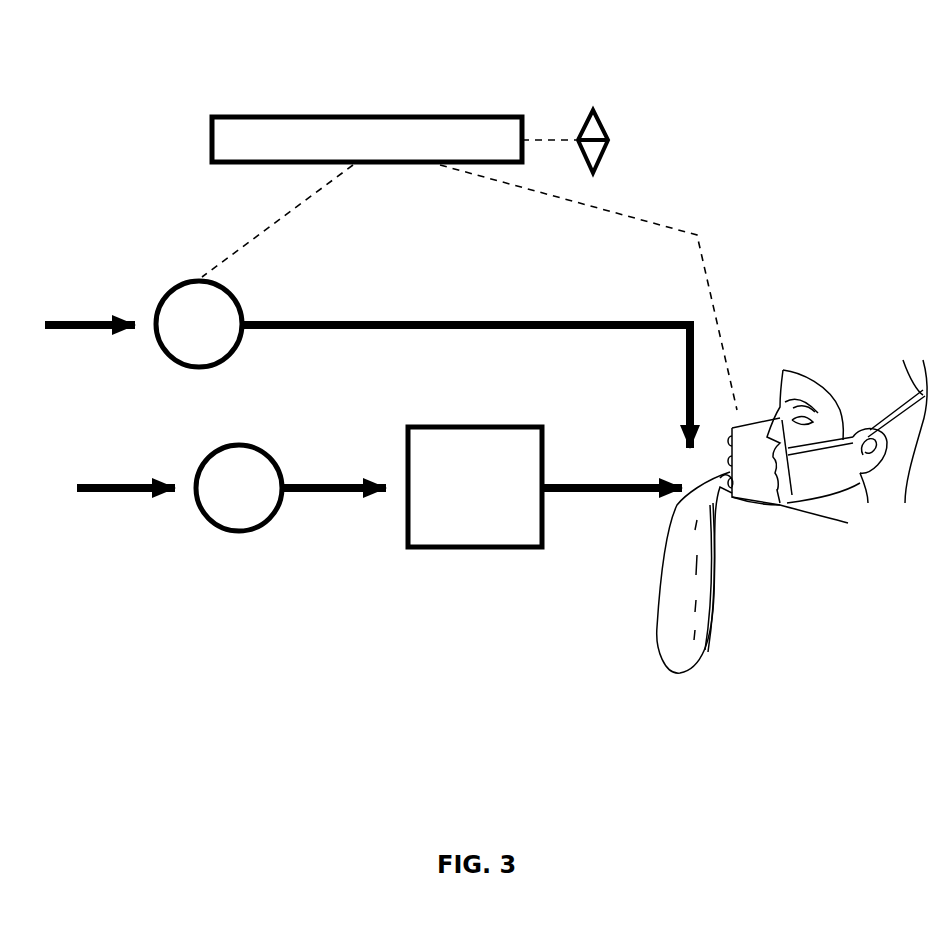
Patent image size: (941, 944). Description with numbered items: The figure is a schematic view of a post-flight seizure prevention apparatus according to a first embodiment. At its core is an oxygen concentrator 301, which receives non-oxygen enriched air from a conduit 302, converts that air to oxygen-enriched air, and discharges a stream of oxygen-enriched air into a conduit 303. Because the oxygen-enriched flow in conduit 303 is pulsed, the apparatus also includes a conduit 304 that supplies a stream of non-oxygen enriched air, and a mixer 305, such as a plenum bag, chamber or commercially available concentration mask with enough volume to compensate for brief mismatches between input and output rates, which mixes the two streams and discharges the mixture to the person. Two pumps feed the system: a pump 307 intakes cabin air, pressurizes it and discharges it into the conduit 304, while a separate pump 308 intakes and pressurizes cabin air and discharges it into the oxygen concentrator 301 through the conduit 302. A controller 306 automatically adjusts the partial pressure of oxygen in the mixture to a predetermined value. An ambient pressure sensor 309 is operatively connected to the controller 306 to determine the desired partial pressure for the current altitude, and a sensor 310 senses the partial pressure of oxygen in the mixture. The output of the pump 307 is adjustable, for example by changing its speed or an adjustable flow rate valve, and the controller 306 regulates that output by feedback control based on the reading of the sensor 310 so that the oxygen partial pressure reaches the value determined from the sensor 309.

The oxygen concentrator 301 is at (418, 560).
The conduit 302 is at (334, 468).
The conduit 303 is at (628, 466).
The conduit 304 is at (388, 305).
The mixer 305 is at (675, 690).
The controller 306 is at (388, 100).
The pump 307 is at (170, 373).
The pump 308 is at (222, 542).
The ambient pressure sensor 309 is at (626, 146).
The sensor 310 is at (748, 410).